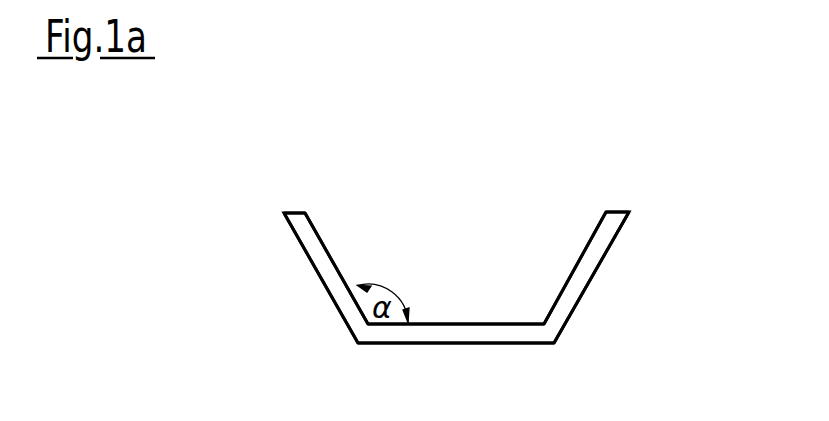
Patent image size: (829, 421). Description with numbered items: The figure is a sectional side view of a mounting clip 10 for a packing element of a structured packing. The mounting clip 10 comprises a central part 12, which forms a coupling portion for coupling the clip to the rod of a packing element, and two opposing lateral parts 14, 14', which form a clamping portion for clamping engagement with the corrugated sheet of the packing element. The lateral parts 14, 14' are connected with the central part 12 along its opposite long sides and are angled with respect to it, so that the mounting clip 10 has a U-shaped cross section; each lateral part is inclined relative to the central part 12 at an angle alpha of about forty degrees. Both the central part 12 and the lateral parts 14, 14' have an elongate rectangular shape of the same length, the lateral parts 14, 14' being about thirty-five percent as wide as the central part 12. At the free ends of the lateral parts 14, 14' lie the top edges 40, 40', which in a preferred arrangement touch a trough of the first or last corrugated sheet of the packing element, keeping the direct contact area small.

The mounting clip 10 is at (485, 152).
The central part 12 is at (425, 345).
The lateral part 14 is at (628, 277).
The lateral part 14' is at (277, 278).
The top edge 40 is at (659, 179).
The top edge 40' is at (246, 180).